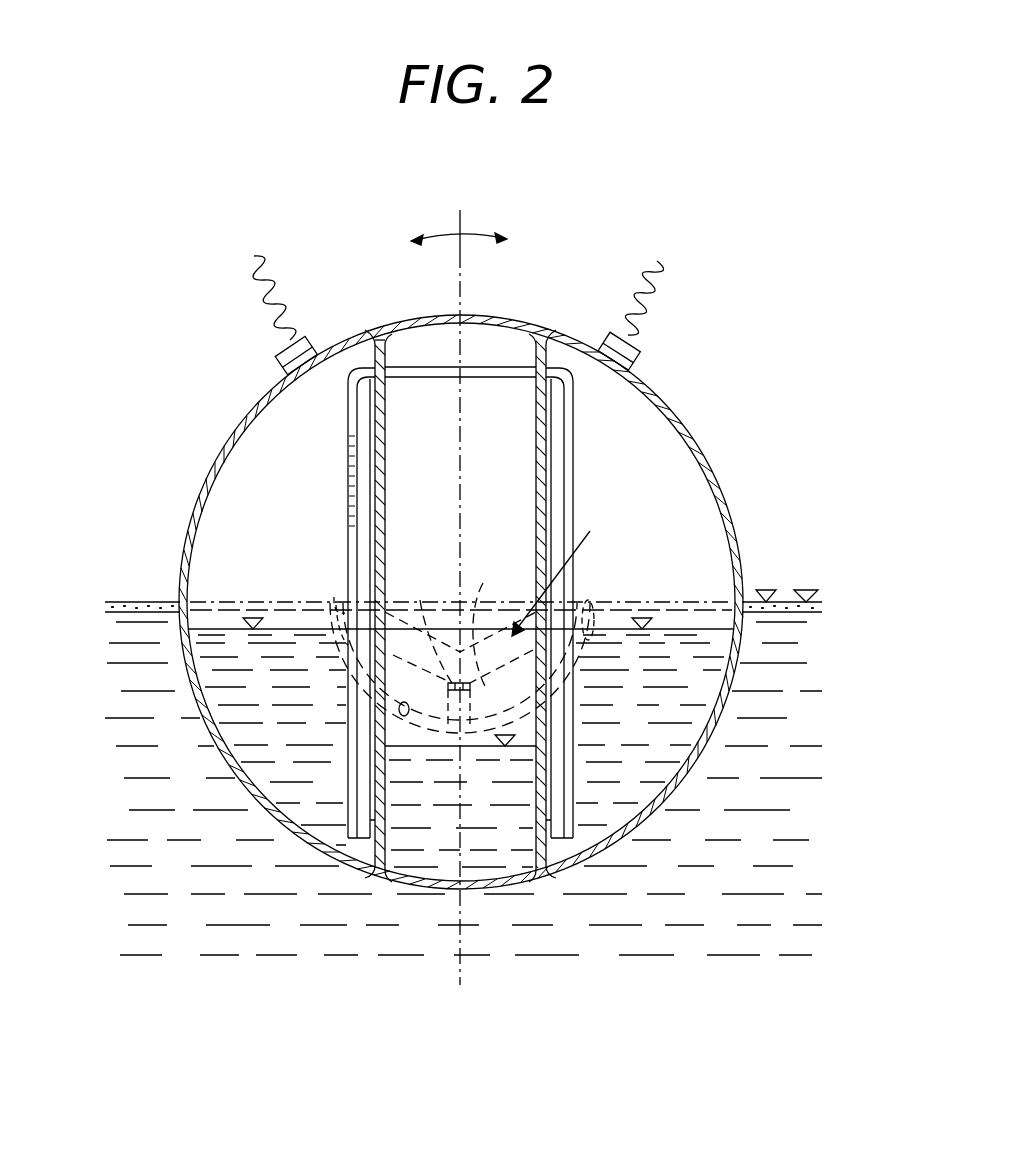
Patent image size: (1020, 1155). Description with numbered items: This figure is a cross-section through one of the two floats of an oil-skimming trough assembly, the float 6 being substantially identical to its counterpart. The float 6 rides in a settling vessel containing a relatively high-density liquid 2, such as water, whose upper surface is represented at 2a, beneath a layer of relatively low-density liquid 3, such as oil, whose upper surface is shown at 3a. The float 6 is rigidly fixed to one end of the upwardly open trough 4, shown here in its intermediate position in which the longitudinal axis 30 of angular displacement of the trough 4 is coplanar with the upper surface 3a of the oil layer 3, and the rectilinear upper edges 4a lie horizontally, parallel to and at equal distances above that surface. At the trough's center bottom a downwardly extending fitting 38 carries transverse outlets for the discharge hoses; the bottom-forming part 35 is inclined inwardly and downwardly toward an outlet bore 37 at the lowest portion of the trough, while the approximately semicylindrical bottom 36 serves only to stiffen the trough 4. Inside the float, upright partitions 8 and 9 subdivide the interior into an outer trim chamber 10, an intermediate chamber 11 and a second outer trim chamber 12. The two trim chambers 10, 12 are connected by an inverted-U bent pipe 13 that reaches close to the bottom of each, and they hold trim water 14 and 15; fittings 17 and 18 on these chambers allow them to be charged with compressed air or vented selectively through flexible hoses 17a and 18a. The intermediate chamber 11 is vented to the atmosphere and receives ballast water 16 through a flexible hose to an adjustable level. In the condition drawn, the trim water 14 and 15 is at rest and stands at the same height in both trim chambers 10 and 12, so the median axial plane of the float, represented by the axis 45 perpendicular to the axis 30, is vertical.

The high-density liquid 2 is at (231, 915).
The upper surface of the high-density liquid 2a is at (808, 590).
The low-density liquid 3 is at (142, 601).
The upper surface of the low-density liquid 3a is at (766, 588).
The trough 4 is at (555, 571).
The upper edges of the trough 4a is at (586, 598).
The float 6 is at (724, 466).
The upright partition 8 is at (387, 458).
The upright partition 9 is at (536, 506).
The trim chamber 10 is at (693, 572).
The intermediate chamber 11 is at (441, 545).
The trim chamber 12 is at (283, 567).
The inverted-U bent pipe 13 is at (574, 441).
The trim water 14 is at (282, 731).
The trim water 15 is at (650, 736).
The ballast water 16 is at (440, 838).
The fitting 17 is at (312, 346).
The flexible hose 17a is at (274, 309).
The fitting 18 is at (640, 366).
The flexible hose 18a is at (666, 299).
The longitudinal axis of angular displacement 30 is at (410, 603).
The bottom-forming part of the trough 35 is at (492, 630).
The semicylindrical bottom 36 is at (406, 714).
The outlet bore 37 is at (460, 647).
The fitting 38 is at (488, 699).
The median axial plane axis 45 is at (462, 229).